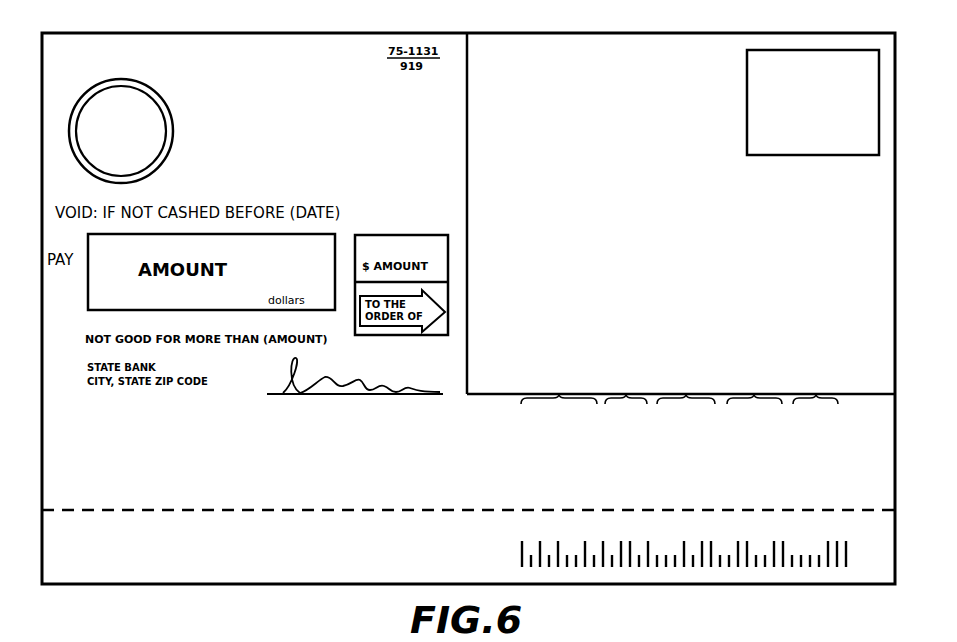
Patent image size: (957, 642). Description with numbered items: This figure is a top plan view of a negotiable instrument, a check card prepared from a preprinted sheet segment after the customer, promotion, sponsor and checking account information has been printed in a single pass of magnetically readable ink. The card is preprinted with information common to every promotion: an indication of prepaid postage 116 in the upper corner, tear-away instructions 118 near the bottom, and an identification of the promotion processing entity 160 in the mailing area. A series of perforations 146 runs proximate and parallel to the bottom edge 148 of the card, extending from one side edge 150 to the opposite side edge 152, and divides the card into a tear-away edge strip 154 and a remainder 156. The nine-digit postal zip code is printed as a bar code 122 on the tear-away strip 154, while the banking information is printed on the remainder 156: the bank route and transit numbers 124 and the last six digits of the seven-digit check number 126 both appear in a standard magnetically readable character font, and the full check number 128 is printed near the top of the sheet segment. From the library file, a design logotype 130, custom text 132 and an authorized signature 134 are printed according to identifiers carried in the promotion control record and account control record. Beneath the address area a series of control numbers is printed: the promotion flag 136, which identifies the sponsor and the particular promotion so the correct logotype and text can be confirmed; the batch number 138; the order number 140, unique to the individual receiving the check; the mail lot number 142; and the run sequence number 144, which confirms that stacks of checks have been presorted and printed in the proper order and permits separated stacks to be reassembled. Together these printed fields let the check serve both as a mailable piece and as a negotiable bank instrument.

The indication of prepaid postage 116 is at (818, 56).
The tear-away instructions 118 is at (240, 542).
The bar code representation of the postal zip code 122 is at (515, 553).
The bank route and transit numbers 124 is at (172, 440).
The last six digits of check number 126 is at (470, 480).
The full check number 128 is at (590, 32).
The design logotype 130 is at (138, 82).
The custom text 132 is at (364, 132).
The authorized signature 134 is at (430, 363).
The promotion flag 136 is at (559, 394).
The batch number 138 is at (626, 394).
The order number 140 is at (686, 394).
The mail lot number 142 is at (754, 394).
The run sequence number 144 is at (816, 394).
The series of perforations 146 is at (385, 510).
The bottom edge 148 is at (352, 583).
The side edge 150 is at (42, 421).
The opposite side edge 152 is at (895, 245).
The tear-away edge strip 154 is at (660, 517).
The remainder 156 is at (280, 42).
The promotion processing entity 160 is at (658, 108).